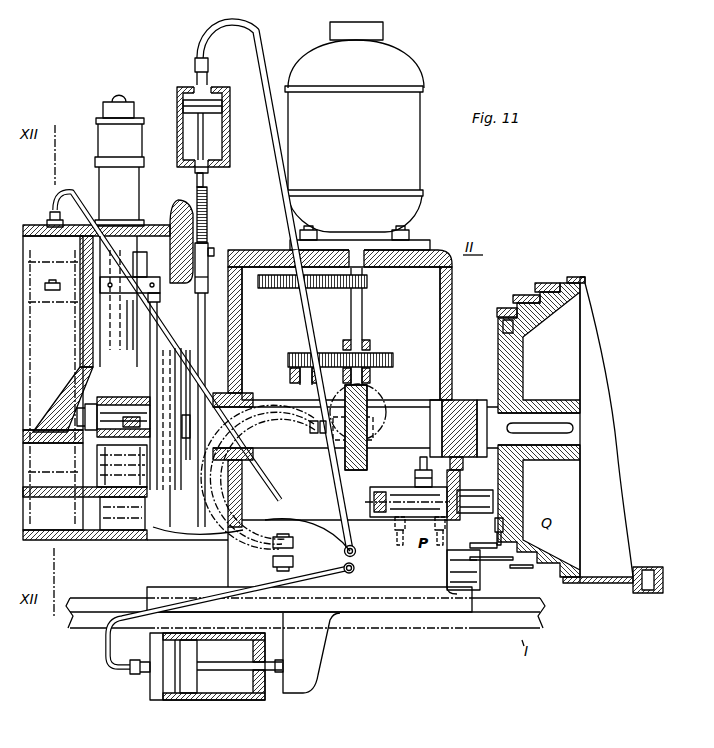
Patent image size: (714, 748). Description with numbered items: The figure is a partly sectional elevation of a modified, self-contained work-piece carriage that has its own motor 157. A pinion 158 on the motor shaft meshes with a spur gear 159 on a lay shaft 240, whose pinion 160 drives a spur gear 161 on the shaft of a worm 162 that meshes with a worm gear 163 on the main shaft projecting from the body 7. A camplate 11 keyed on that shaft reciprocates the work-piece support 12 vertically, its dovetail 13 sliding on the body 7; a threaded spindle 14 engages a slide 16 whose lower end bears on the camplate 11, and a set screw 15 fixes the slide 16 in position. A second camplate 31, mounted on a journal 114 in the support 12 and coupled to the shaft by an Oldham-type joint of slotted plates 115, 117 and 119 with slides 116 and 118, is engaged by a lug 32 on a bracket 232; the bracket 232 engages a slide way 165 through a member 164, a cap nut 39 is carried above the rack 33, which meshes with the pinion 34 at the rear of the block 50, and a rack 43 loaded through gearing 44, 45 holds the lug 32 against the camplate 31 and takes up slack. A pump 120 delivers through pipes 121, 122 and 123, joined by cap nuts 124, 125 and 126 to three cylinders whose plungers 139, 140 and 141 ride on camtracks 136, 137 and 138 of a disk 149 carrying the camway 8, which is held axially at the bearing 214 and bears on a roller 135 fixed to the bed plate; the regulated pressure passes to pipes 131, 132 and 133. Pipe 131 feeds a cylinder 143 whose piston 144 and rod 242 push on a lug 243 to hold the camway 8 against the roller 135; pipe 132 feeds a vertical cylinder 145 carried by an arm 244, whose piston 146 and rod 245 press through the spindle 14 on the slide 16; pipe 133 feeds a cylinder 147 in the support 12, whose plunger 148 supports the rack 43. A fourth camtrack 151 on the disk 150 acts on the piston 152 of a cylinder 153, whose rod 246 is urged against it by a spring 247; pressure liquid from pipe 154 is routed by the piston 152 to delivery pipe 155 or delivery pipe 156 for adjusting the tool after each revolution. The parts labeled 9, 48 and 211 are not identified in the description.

The body 7 is at (460, 273).
The camway 8 is at (590, 322).
The base 9 is at (95, 606).
The camplate 11 is at (206, 322).
The work-piece support 12 is at (140, 235).
The dovetail 13 is at (171, 224).
The threaded spindle 14 is at (208, 232).
The set screw 15 is at (216, 250).
The slide 16 is at (208, 285).
The second camplate 31 is at (158, 333).
The lug 32 is at (160, 297).
The rack 33 is at (131, 332).
The pinion 34 is at (165, 538).
The cap nut 39 is at (101, 140).
The rack 43 is at (77, 345).
The gearing 44 is at (135, 410).
The gearing 45 is at (40, 412).
The plate 48 is at (80, 520).
The block 50 is at (115, 525).
The journal 114 is at (114, 413).
The slotted plate 115 is at (192, 490).
The slide 116 is at (191, 427).
The slotted plate 117 is at (180, 386).
The slide 118 is at (188, 362).
The slotted plate 119 is at (215, 530).
The pump 120 is at (384, 384).
The delivery pipe 121 is at (243, 545).
The delivery pipe 122 is at (265, 545).
The delivery pipe 123 is at (285, 482).
The cap nut 124 is at (280, 587).
The cap nut 125 is at (294, 560).
The cap nut 126 is at (294, 543).
The pipe 131 is at (110, 660).
The pipe 132 is at (252, 42).
The pipe 133 is at (322, 525).
The roller 135 is at (636, 593).
The camtrack 136 is at (548, 283).
The camtrack 137 is at (516, 295).
The camtrack 138 is at (504, 308).
The hollow plunger 139 is at (558, 583).
The plunger 140 is at (520, 570).
The plunger 141 is at (486, 562).
The cylinder 143 is at (242, 700).
The piston 144 is at (186, 700).
The vertical cylinder 145 is at (182, 132).
The piston 146 is at (180, 110).
The cylinder 147 is at (66, 225).
The plunger 148 is at (46, 286).
The disk 149 is at (508, 367).
The disk 150 is at (520, 495).
The fourth camtrack 151 is at (498, 325).
The piston 152 is at (408, 545).
The cylinder 153 is at (400, 487).
The pipe 154 is at (464, 462).
The delivery pipe 155 is at (400, 560).
The delivery pipe 156 is at (440, 560).
The motor 157 is at (424, 158).
The pinion 158 is at (368, 281).
The spur gear 159 is at (352, 290).
The pinion 160 is at (289, 358).
The spur gear 161 is at (372, 354).
The worm 162 is at (374, 426).
The worm gear 163 is at (378, 398).
The member 164 is at (140, 236).
The slide way 165 is at (110, 240).
The bracket 211 is at (238, 385).
The bearing 214 is at (470, 398).
The bracket 232 is at (142, 285).
The lay shaft 240 is at (298, 319).
The piston rod 242 is at (285, 680).
The lug 243 is at (322, 663).
The arm 244 is at (246, 185).
The piston rod 245 is at (205, 132).
The piston rod 246 is at (478, 513).
The spring 247 is at (356, 551).